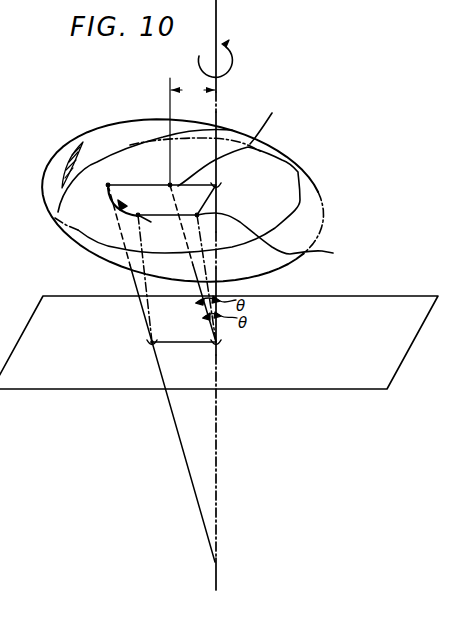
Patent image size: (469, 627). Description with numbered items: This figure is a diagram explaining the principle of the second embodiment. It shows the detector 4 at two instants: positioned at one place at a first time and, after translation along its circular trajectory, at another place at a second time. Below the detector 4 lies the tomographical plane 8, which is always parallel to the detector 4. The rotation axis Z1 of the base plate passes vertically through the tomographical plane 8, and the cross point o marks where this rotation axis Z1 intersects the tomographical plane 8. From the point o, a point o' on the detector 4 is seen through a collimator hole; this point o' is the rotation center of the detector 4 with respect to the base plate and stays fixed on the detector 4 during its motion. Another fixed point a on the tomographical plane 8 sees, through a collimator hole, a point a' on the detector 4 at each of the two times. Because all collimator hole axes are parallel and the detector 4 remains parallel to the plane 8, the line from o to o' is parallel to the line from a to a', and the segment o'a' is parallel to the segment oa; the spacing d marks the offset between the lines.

The detector 4 is at (341, 187).
The tomographical plane 8 is at (390, 362).
The fixed point a is at (63, 251).
The cross point o is at (272, 225).
The distance d is at (192, 131).
The rotation axis Z1 Z1' Z1 is at (226, 590).